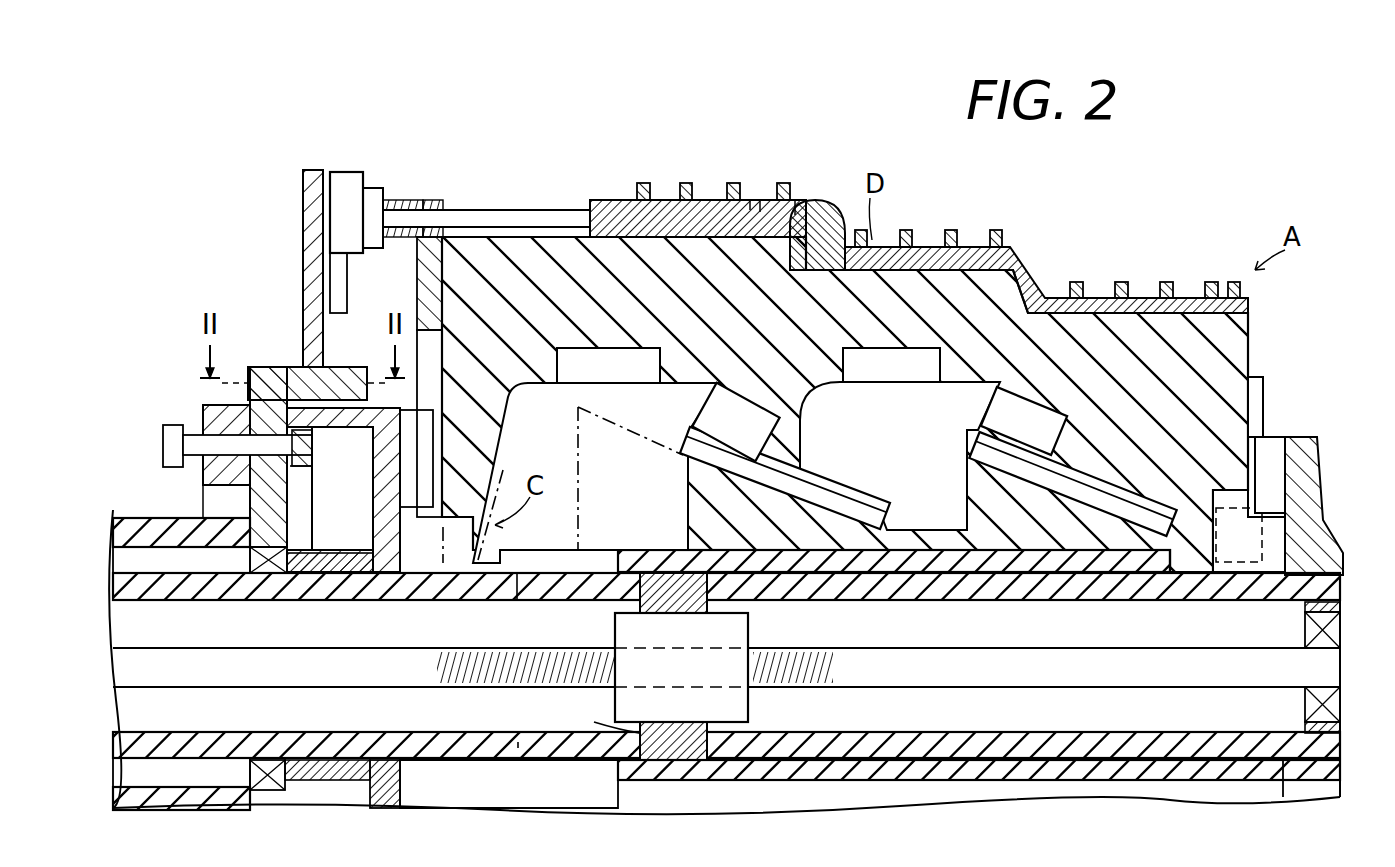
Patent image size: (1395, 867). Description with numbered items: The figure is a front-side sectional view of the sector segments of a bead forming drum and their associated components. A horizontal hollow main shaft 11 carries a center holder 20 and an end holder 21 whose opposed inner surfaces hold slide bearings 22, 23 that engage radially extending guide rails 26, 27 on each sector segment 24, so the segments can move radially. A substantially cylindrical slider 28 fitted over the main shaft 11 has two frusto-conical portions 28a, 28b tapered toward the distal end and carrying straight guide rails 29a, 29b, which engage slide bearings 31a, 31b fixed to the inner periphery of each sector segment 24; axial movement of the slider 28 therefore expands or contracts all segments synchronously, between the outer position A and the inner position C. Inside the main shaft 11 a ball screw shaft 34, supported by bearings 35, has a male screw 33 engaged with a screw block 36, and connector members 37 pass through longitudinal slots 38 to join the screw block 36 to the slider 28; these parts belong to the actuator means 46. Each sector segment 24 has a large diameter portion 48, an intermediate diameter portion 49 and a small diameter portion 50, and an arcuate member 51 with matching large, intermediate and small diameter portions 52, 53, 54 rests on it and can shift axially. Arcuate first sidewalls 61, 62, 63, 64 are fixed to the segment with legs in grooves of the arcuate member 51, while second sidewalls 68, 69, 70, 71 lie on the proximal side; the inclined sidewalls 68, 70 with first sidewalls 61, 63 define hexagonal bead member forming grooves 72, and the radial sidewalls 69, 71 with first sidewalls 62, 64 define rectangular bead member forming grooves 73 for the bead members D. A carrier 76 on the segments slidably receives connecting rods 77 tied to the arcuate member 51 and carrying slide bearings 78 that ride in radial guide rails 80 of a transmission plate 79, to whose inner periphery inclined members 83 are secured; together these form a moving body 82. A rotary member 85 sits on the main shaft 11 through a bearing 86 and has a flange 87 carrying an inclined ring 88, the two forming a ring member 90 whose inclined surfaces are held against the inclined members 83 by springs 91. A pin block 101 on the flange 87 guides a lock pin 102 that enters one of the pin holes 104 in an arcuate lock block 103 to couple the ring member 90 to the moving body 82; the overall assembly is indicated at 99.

The main shaft 11 is at (182, 746).
The center holder 20 is at (332, 600).
The end holder 21 is at (1322, 452).
The slide bearing 22 is at (444, 420).
The slide bearing 23 is at (1280, 440).
The sector segment 24 is at (1264, 310).
The guide rail 26 is at (448, 362).
The guide rail 27 is at (1266, 385).
The slider 28 is at (650, 550).
The conical portion 28a is at (842, 486).
The conical portion 28b is at (1102, 468).
The guide rail 29a is at (796, 470).
The guide rail 29b is at (1152, 494).
The slide bearing 31a is at (715, 395).
The slide bearing 31b is at (1000, 400).
The male screw 33 is at (796, 662).
The ball screw shaft 34 is at (928, 664).
The bearing 35 is at (1335, 703).
The screw block 36 is at (748, 706).
The connector member 37 is at (612, 738).
The longitudinal slot 38 is at (519, 735).
The actuator means 46 is at (454, 727).
The large diameter portion 48 is at (575, 255).
The intermediate diameter portion 49 is at (935, 285).
The small diameter portion 50 is at (1142, 330).
The arcuate member 51 is at (866, 240).
The large diameter portion 52 is at (752, 200).
The intermediate diameter portion 53 is at (986, 246).
The small diameter portion 54 is at (1186, 290).
The first sidewall 61 is at (612, 204).
The first sidewall 62 is at (675, 200).
The first sidewall 63 is at (734, 190).
The first sidewall 64 is at (800, 200).
The second sidewall 68 is at (642, 190).
The second sidewall 69 is at (710, 195).
The second sidewall 70 is at (765, 195).
The second sidewall 71 is at (822, 205).
The bead member forming groove 72 is at (1070, 292).
The bead member forming groove 73 is at (1228, 290).
The carrier 76 is at (446, 200).
The connecting rod 77 is at (505, 210).
The slide bearing 78 is at (372, 188).
The transmission plate 79 is at (303, 215).
The guide rail 80 is at (341, 172).
The moving body 82 is at (291, 176).
The inclined member 83 is at (348, 367).
The rotary member 85 is at (122, 526).
The bearing 86 is at (275, 560).
The flange 87 is at (245, 500).
The inclined ring 88 is at (268, 367).
The ring member 90 is at (186, 355).
The spring 91 is at (400, 200).
The sensor unit 99 is at (207, 187).
The pin block 101 is at (215, 405).
The lock pin 102 is at (168, 436).
The lock block 103 is at (322, 445).
The pin hole 104 is at (300, 474).